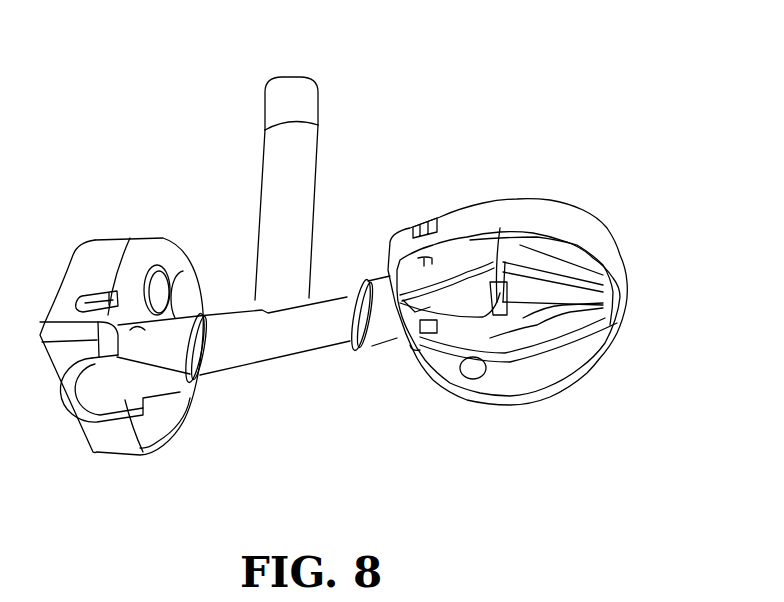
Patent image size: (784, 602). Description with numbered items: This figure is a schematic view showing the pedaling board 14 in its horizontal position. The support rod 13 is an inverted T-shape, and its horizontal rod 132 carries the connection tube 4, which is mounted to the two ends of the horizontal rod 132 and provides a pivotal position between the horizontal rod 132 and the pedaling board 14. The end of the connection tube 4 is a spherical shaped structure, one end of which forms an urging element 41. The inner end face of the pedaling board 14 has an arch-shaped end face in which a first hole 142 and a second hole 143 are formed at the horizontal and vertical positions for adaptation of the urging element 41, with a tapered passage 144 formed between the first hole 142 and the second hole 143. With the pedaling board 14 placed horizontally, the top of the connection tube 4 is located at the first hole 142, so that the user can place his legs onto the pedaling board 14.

The connection tube 4 is at (370, 335).
The support rod 13 is at (310, 154).
The pedaling board 14 is at (600, 237).
The urging element 41 is at (503, 285).
The horizontal rod 132 is at (257, 345).
The first hole 142 is at (497, 235).
The second hole 143 is at (413, 352).
The tapered passage 144 is at (470, 325).